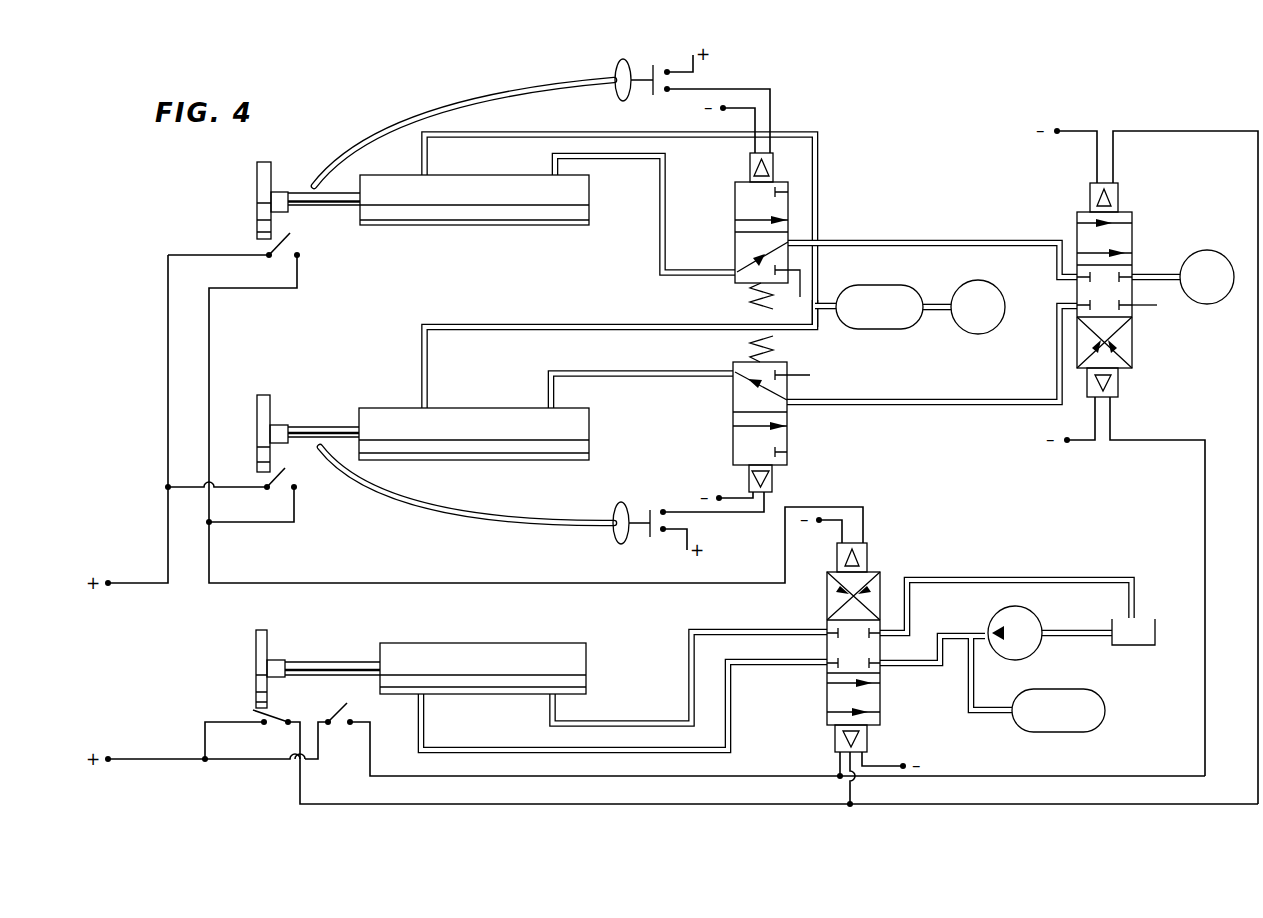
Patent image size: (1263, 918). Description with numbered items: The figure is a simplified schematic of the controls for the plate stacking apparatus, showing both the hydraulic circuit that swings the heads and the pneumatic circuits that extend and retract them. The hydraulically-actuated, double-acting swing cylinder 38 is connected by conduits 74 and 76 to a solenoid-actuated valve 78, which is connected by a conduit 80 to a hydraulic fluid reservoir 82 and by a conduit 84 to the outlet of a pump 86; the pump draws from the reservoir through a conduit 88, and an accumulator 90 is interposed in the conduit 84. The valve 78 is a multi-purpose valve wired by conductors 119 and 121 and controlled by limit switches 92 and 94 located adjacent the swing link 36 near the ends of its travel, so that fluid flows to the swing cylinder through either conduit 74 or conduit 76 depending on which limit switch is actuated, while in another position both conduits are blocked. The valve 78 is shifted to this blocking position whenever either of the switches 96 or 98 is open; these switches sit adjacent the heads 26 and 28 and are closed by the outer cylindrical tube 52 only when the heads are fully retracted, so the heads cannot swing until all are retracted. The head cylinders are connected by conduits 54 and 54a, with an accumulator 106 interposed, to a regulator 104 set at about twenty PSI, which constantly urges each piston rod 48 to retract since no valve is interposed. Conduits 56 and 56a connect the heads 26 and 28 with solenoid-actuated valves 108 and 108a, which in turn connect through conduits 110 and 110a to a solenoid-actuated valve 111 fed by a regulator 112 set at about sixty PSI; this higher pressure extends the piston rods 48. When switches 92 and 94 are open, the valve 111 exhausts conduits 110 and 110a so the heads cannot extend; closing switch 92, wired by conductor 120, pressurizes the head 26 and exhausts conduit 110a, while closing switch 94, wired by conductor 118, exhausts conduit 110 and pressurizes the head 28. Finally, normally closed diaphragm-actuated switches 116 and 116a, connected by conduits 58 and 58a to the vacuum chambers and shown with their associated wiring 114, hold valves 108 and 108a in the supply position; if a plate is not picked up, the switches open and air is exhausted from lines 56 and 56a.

The head 26 is at (487, 402).
The head 28 is at (541, 232).
The swing link 36 is at (266, 646).
The swing cylinder 38 is at (581, 660).
The piston rod 48 is at (322, 428).
The outer cylindrical tube 52 is at (270, 399).
The conduit 54 is at (500, 326).
The conduit 54a is at (620, 131).
The conduit 56 is at (643, 370).
The conduit 56a is at (603, 159).
The conduit 58 is at (500, 518).
The conduit 58a is at (433, 110).
The conduit 74 is at (637, 720).
The conduit 76 is at (518, 746).
The solenoid-actuated valve 78 is at (827, 617).
The conduit 80 is at (1080, 578).
The hydraulic fluid reservoir 82 is at (1156, 621).
The conduit 84 is at (900, 668).
The pump 86 is at (1040, 650).
The conduit 88 is at (1093, 640).
The accumulator 90 is at (1105, 707).
The limit switch 92 is at (255, 712).
The limit switch 94 is at (347, 706).
The switch 96 is at (291, 493).
The switch 98 is at (297, 260).
The regulator 104 is at (1003, 291).
The accumulator 106 is at (890, 330).
The solenoid-actuated valve 108 is at (733, 408).
The solenoid-actuated valve 108a is at (788, 205).
The conduit 110 is at (895, 406).
The conduit 110a is at (914, 243).
The solenoid-actuated valve 111 is at (1078, 216).
The regulator 112 is at (1225, 300).
The wire 114 is at (730, 514).
The diaphragm-actuated switch 116 is at (614, 505).
The diaphragm-actuated switch 116a is at (616, 68).
The conductor 118 is at (1205, 550).
The conductor 119 is at (730, 776).
The conductor 120 is at (1258, 550).
The conductor 121 is at (766, 804).